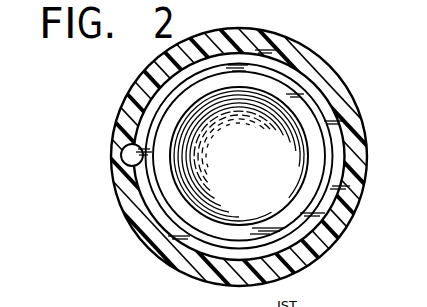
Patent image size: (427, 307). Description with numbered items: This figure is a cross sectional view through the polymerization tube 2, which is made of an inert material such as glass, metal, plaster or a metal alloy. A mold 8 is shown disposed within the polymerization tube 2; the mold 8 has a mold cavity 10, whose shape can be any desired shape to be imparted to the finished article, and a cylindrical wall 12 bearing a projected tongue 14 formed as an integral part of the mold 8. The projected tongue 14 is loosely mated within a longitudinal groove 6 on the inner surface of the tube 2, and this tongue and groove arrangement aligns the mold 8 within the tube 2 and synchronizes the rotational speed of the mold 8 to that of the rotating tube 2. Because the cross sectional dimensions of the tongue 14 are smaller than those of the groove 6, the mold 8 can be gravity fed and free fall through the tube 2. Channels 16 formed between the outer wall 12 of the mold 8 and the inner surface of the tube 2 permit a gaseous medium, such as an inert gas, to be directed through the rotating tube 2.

The polymerization tube 2 is at (305, 44).
The longitudinal groove 6 is at (122, 153).
The mold 8 is at (312, 111).
The mold cavity 10 is at (291, 162).
The cylindrical wall 12 is at (334, 226).
The projected tongue 14 is at (127, 172).
The channels 16 is at (142, 98).